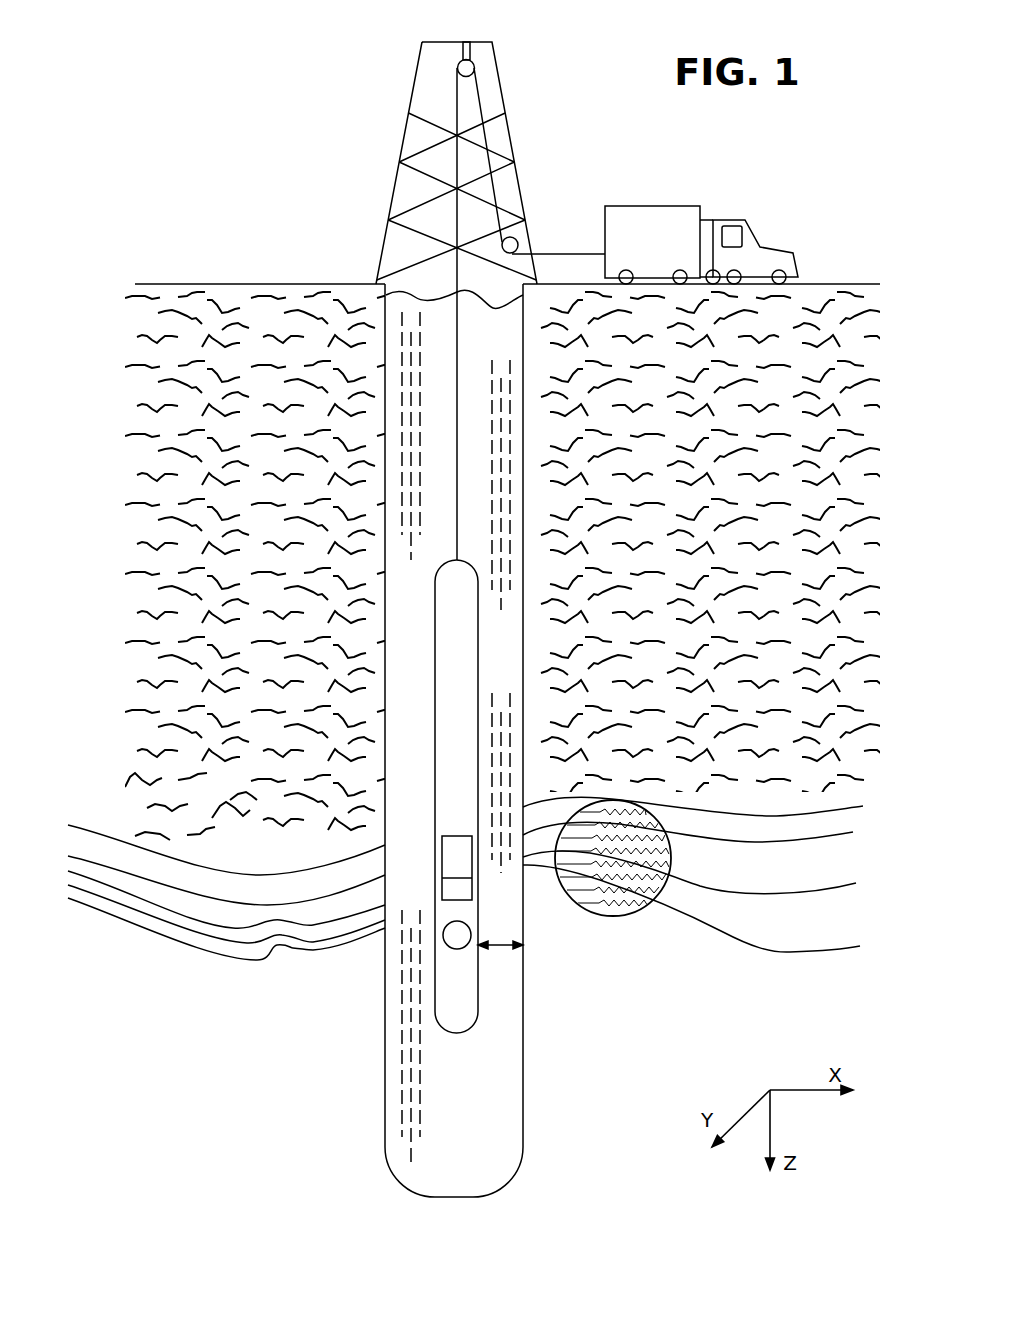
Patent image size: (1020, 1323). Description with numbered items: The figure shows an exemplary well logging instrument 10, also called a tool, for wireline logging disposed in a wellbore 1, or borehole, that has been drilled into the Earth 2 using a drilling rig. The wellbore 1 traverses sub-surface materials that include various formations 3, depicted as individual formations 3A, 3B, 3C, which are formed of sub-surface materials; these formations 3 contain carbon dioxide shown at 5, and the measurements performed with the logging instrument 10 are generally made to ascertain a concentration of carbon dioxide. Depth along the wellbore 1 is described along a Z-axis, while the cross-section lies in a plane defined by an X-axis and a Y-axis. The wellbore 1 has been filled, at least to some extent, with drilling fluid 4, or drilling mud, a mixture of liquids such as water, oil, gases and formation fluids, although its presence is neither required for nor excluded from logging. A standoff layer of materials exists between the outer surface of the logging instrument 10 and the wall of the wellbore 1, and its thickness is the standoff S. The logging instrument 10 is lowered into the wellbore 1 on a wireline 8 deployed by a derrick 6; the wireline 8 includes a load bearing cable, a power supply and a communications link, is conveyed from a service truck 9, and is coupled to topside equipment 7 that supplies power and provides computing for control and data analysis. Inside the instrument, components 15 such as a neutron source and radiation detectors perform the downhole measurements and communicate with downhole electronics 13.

The wellbore 1 is at (500, 1167).
The Earth 2 is at (200, 307).
The formations 3 is at (797, 925).
The formation 3A is at (832, 820).
The formation 3B is at (832, 863).
The formation 3C is at (835, 923).
The drilling fluid 4 is at (401, 343).
The carbon dioxide 5 is at (613, 917).
The derrick 6 is at (498, 80).
The topside equipment 7 is at (640, 206).
The wireline 8 is at (457, 97).
The service truck 9 is at (760, 247).
The well logging instrument 10 is at (450, 965).
The downhole electronics 13 is at (457, 868).
The components 15 is at (450, 936).
The standoff S is at (500, 948).